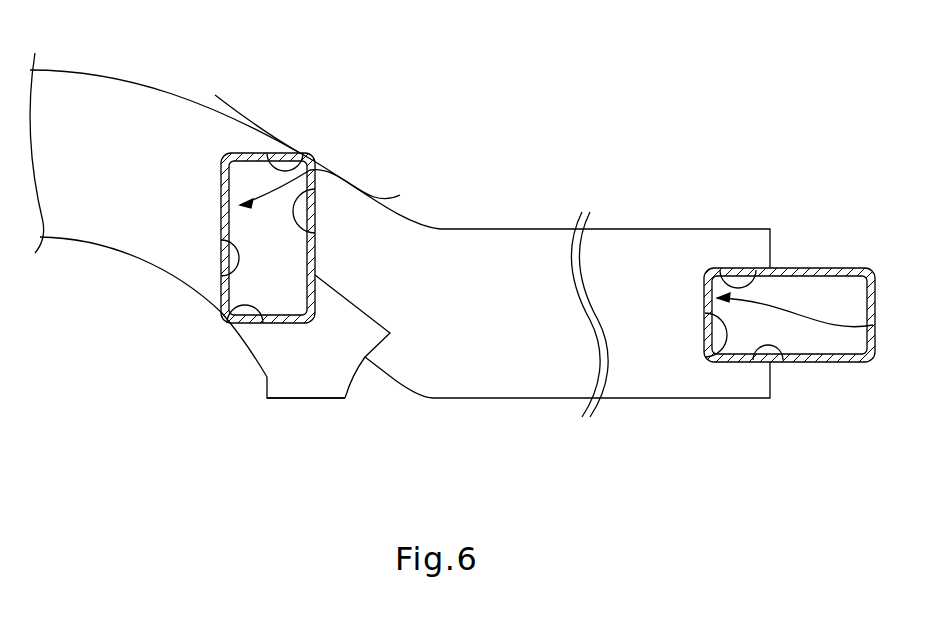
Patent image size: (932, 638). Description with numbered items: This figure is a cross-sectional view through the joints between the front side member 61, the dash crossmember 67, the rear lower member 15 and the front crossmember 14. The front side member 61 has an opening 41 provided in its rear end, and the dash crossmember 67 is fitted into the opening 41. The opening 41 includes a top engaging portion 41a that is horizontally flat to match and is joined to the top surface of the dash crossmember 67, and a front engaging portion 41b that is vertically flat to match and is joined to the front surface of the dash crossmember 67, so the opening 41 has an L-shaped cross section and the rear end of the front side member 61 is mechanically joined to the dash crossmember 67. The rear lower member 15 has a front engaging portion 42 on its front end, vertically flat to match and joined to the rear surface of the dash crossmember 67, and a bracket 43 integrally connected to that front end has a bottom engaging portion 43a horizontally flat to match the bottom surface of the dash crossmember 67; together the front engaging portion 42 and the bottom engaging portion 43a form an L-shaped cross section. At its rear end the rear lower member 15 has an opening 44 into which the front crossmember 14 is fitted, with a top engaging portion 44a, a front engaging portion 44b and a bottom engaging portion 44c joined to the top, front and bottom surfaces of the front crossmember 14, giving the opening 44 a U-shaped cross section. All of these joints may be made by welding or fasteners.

The front crossmember 14 is at (848, 268).
The rear lower member 15 is at (518, 253).
The opening 41 is at (310, 165).
The top engaging portion 41a is at (307, 152).
The front engaging portion 41b is at (222, 285).
The front engaging portion 42 is at (400, 195).
The bracket 43 is at (308, 376).
The bottom engaging portion 43a is at (222, 320).
The opening 44 is at (873, 325).
The top engaging portion 44a is at (723, 270).
The front engaging portion 44b is at (730, 353).
The bottom engaging portion 44c is at (782, 352).
The front side member 61 is at (135, 108).
The dash crossmember 67 is at (250, 153).